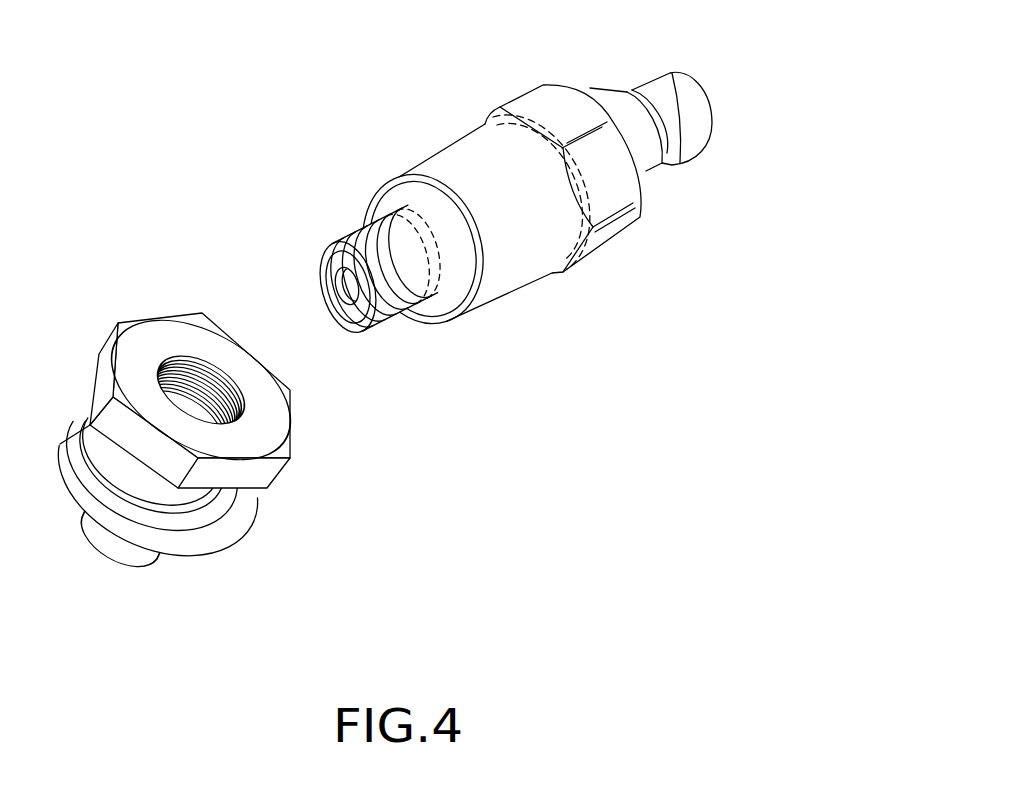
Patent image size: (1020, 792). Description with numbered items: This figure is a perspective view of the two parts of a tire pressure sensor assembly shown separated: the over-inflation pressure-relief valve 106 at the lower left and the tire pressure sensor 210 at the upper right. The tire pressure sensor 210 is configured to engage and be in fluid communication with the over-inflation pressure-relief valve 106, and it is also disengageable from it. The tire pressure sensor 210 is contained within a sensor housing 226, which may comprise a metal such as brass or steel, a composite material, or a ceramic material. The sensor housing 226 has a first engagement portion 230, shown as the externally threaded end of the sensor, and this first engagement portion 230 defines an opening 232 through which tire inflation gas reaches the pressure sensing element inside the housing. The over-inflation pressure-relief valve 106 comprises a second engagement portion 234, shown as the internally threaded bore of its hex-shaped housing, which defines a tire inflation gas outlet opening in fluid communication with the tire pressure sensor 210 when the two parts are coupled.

The over-inflation pressure-relief valve 106 is at (198, 430).
The tire pressure sensor 210 is at (554, 230).
The sensor housing 226 is at (455, 157).
The first engagement portion 230 is at (397, 320).
The opening 232 is at (347, 295).
The second engagement portion 234 is at (200, 372).